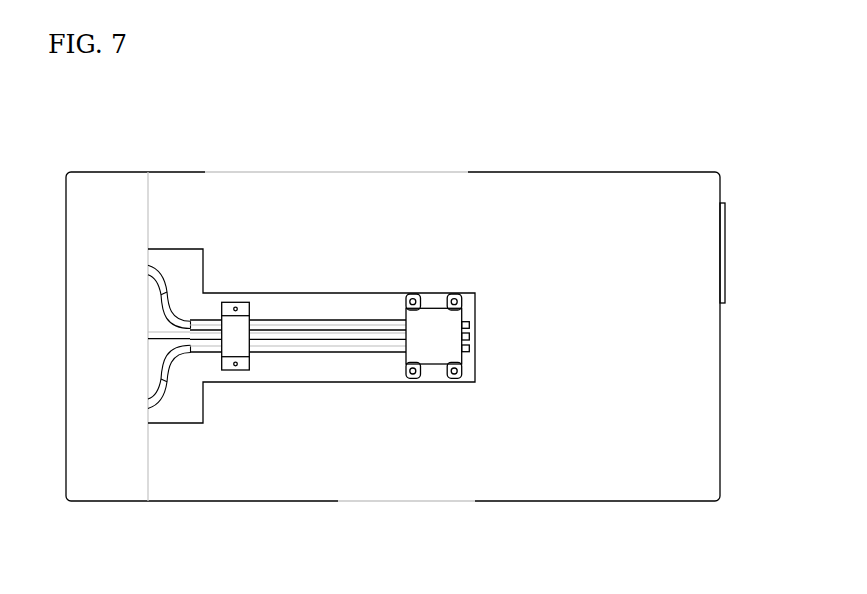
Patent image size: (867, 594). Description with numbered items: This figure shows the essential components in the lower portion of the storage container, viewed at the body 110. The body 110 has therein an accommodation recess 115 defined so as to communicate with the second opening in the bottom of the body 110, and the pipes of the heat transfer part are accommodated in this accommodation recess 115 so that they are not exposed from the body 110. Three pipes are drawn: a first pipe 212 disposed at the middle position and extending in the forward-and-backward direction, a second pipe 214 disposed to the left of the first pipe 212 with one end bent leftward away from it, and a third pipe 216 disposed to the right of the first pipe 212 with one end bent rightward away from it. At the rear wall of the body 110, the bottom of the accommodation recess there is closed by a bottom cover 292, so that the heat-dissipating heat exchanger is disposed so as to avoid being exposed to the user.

The body 110 is at (572, 142).
The accommodation recess 115 is at (329, 301).
The first pipe 212 is at (328, 335).
The second pipe 214 is at (273, 345).
The third pipe 216 is at (378, 328).
The bottom cover 292 is at (109, 492).